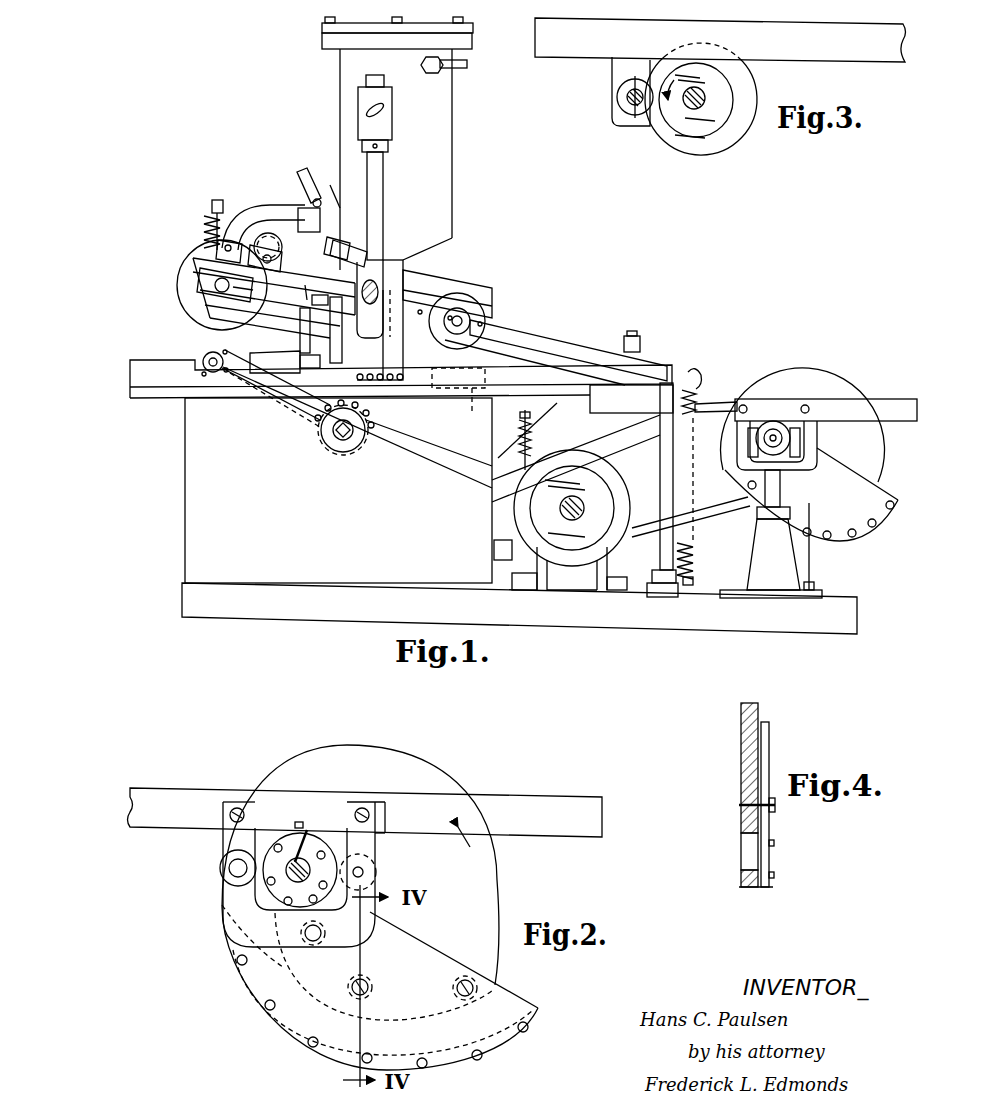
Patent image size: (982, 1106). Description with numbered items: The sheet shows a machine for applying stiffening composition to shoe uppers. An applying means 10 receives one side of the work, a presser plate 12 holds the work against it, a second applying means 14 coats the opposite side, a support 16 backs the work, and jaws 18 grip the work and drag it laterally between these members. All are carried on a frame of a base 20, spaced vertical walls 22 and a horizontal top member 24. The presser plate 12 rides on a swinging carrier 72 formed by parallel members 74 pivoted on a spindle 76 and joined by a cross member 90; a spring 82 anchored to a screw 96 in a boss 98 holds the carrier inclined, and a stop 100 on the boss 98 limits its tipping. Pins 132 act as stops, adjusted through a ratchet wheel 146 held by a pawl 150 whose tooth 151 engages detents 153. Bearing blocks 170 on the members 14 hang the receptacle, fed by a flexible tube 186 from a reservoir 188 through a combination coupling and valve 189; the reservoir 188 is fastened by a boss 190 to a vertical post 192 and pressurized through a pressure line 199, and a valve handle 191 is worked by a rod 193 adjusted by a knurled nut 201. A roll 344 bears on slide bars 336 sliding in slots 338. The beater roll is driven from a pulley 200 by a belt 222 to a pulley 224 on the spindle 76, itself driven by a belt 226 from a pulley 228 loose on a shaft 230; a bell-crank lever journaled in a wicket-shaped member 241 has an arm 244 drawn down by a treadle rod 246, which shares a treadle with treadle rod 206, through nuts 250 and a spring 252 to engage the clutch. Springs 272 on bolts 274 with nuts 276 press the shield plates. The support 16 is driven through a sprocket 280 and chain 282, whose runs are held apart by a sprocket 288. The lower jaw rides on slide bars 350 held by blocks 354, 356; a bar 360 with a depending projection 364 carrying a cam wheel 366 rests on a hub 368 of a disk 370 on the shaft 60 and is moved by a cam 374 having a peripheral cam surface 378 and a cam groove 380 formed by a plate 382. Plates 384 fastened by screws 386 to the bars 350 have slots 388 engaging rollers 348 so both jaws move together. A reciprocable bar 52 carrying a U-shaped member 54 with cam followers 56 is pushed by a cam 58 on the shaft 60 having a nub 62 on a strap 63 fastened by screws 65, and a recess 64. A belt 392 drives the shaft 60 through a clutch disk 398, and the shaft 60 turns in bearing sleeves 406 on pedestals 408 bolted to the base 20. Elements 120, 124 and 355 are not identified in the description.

In FIG. 1, the applying means 10 is at (285, 362).
In FIG. 1, the presser plate 12 is at (265, 300).
In FIG. 1, the applying means 14 is at (200, 300).
In FIG. 1, the support 16 is at (208, 354).
In FIG. 1, the jaws 18 is at (178, 289).
In FIG. 1, the base 20 is at (594, 618).
In FIG. 1, the vertical walls 22 is at (338, 490).
In FIG. 1, the horizontal top member 24 is at (408, 397).
In FIG. 1, the reciprocable bar 52 is at (716, 402).
In FIG. 2, the reciprocable bar 52 is at (160, 797).
In FIG. 1, the U-shaped member 54 is at (818, 453).
In FIG. 2, the U-shaped member 54 is at (222, 840).
In FIG. 1, the cam followers 56 is at (750, 406).
In FIG. 2, the cam followers 56 is at (220, 868).
In FIG. 2, the cam 58 is at (308, 835).
In FIG. 1, the shaft 60 is at (792, 436).
In FIG. 2, the shaft 60 is at (290, 879).
In FIG. 3, the shaft 60 is at (699, 96).
In FIG. 2, the nub 62 is at (287, 833).
In FIG. 2, the strap 63 is at (340, 835).
In FIG. 1, the recess 64 is at (694, 371).
In FIG. 2, the recess 64 is at (323, 920).
In FIG. 2, the screws 65 is at (299, 822).
In FIG. 1, the swinging carrier 72 is at (538, 320).
In FIG. 1, the parallel spaced members 74 is at (522, 336).
In FIG. 1, the spindle 76 is at (457, 320).
In FIG. 1, the spring 82 is at (695, 455).
In FIG. 1, the cross member 90 is at (630, 335).
In FIG. 1, the screw 96 is at (696, 574).
In FIG. 1, the boss 98 is at (670, 592).
In FIG. 1, the stop 100 is at (660, 455).
In FIG. 1, the gear 120 is at (265, 235).
In FIG. 1, the block 124 is at (275, 245).
In FIG. 1, the pins 132 is at (306, 292).
In FIG. 1, the ratchet wheel 146 is at (340, 238).
In FIG. 1, the pawl 150 is at (368, 262).
In FIG. 1, the tooth 151 is at (362, 240).
In FIG. 1, the detents 153 is at (366, 250).
In FIG. 1, the bearing blocks 170 is at (222, 296).
In FIG. 1, the flexible tube 186 is at (266, 206).
In FIG. 1, the reservoir 188 is at (452, 130).
In FIG. 1, the combination coupling and valve 189 is at (302, 210).
In FIG. 1, the boss 190 is at (392, 112).
In FIG. 1, the valve handle 191 is at (307, 172).
In FIG. 1, the vertical post 192 is at (383, 172).
In FIG. 1, the rod 193 is at (318, 195).
In FIG. 1, the pressure line 199 is at (468, 63).
In FIG. 1, the pulley 200 is at (186, 265).
In FIG. 1, the knurled nut 201 is at (320, 206).
In FIG. 1, the treadle rod 206 is at (333, 342).
In FIG. 1, the belt 222 is at (462, 292).
In FIG. 1, the pulley 224 is at (481, 314).
In FIG. 1, the belt 226 is at (545, 348).
In FIG. 1, the pulley 228 is at (577, 562).
In FIG. 1, the shaft 230 is at (560, 509).
In FIG. 1, the wicket-shaped member 241 is at (615, 577).
In FIG. 1, the arm 244 is at (498, 455).
In FIG. 1, the treadle rod 246 is at (495, 552).
In FIG. 1, the nuts 250 is at (521, 426).
In FIG. 1, the spring 252 is at (532, 450).
In FIG. 1, the springs 272 is at (205, 232).
In FIG. 1, the bolts 274 is at (212, 201).
In FIG. 1, the nuts 276 is at (205, 214).
In FIG. 1, the sprocket 280 is at (219, 375).
In FIG. 1, the chain 282 is at (286, 418).
In FIG. 1, the sprocket 288 is at (325, 440).
In FIG. 1, the slide bars 336 is at (317, 305).
In FIG. 1, the slots 338 is at (317, 320).
In FIG. 1, the roll 344 is at (232, 240).
In FIG. 1, the rollers 348 is at (380, 295).
In FIG. 1, the slide bars 350 is at (531, 432).
In FIG. 1, the block 354 is at (455, 390).
In FIG. 1, the table 355 is at (163, 386).
In FIG. 1, the block 356 is at (472, 402).
In FIG. 1, the bar 360 is at (889, 400).
In FIG. 2, the bar 360 is at (216, 790).
In FIG. 3, the bar 360 is at (710, 26).
In FIG. 3, the depending projection 364 is at (612, 98).
In FIG. 4, the depending projection 364 is at (741, 845).
In FIG. 3, the cam wheel 366 is at (620, 108).
In FIG. 3, the hub 368 is at (730, 88).
In FIG. 3, the disk 370 is at (718, 151).
In FIG. 1, the cam 374 is at (835, 393).
In FIG. 2, the cam 374 is at (420, 771).
In FIG. 4, the cam 374 is at (741, 740).
In FIG. 1, the peripheral cam surface 378 is at (796, 368).
In FIG. 2, the peripheral cam surface 378 is at (376, 747).
In FIG. 2, the cam groove 380 is at (452, 1052).
In FIG. 4, the cam groove 380 is at (741, 868).
In FIG. 1, the plate 382 is at (862, 480).
In FIG. 2, the plate 382 is at (445, 950).
In FIG. 4, the plate 382 is at (769, 748).
In FIG. 1, the plates 384 is at (405, 263).
In FIG. 1, the screws 386 is at (373, 362).
In FIG. 1, the slots 388 is at (368, 345).
In FIG. 1, the belt 392 is at (750, 508).
In FIG. 1, the clutch disk 398 is at (746, 478).
In FIG. 1, the bearing sleeves 406 is at (793, 470).
In FIG. 1, the pedestals 408 is at (812, 561).